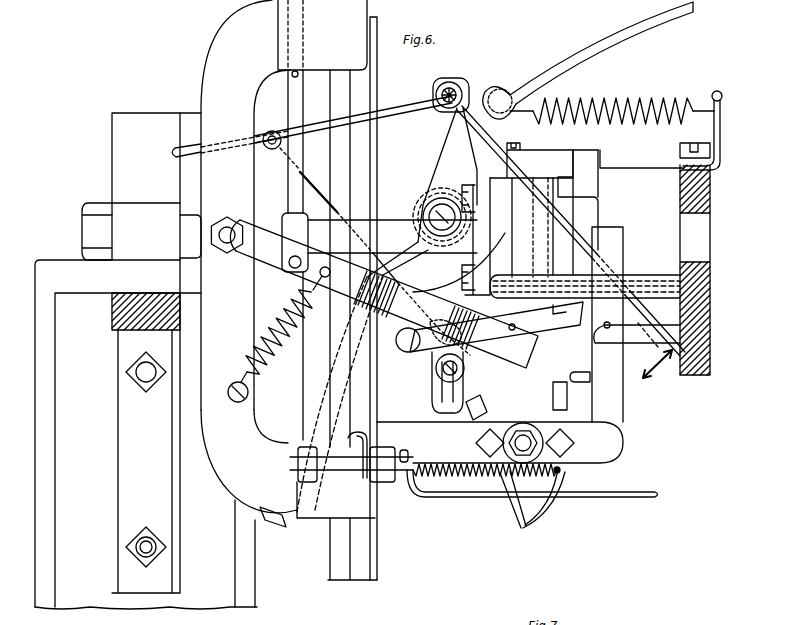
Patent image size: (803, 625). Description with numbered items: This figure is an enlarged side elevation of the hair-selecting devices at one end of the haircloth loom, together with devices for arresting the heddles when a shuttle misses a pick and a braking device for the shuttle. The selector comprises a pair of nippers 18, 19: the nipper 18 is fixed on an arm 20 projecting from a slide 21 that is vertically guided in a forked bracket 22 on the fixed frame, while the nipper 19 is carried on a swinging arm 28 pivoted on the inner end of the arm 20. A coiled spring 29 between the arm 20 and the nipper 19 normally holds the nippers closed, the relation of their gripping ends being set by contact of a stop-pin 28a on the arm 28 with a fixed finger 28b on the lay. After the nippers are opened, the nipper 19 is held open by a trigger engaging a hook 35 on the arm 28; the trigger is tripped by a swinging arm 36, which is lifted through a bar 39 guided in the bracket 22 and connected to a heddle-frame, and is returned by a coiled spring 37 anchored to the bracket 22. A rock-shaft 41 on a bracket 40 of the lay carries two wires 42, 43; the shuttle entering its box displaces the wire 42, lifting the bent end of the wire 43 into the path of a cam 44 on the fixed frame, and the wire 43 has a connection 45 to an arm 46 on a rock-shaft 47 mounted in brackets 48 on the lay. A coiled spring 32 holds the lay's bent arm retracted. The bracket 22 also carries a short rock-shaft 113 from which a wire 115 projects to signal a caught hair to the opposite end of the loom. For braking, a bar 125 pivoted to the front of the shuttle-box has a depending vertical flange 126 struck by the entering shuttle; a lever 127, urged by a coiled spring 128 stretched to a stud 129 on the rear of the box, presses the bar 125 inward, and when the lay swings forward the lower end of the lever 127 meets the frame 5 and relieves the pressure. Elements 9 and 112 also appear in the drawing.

The frame wall 5 is at (712, 280).
The rod 9 is at (297, 95).
The nipper 18 is at (514, 506).
The nipper 19 is at (553, 505).
The arm 20 is at (500, 442).
The slide 21 is at (340, 325).
The forked bracket 22 is at (206, 304).
The swinging arm 28 is at (585, 324).
The stop-pin 28a is at (637, 325).
The fixed finger 28b is at (650, 345).
The coiled spring 29 is at (486, 477).
The coiled spring 32 is at (540, 320).
The hook 35 is at (572, 376).
The swinging arm 36 is at (374, 292).
The coiled spring 37 is at (270, 346).
The bar 39 is at (293, 92).
The bracket 40 is at (450, 175).
The rock-shaft 41 is at (456, 88).
The wire 42 is at (580, 250).
The wire 43 is at (403, 104).
The cam 44 is at (588, 34).
The connection 45 is at (393, 284).
The arm 46 is at (440, 360).
The rock-shaft 47 is at (405, 342).
The brackets 48 is at (496, 324).
The rod 112 is at (460, 496).
The rock-shaft 113 is at (345, 468).
The wire 115 is at (360, 438).
The bar 125 is at (530, 219).
The depending vertical flange 126 is at (620, 200).
The lever 127 is at (440, 186).
The coiled spring 128 is at (612, 105).
The stud 129 is at (717, 148).